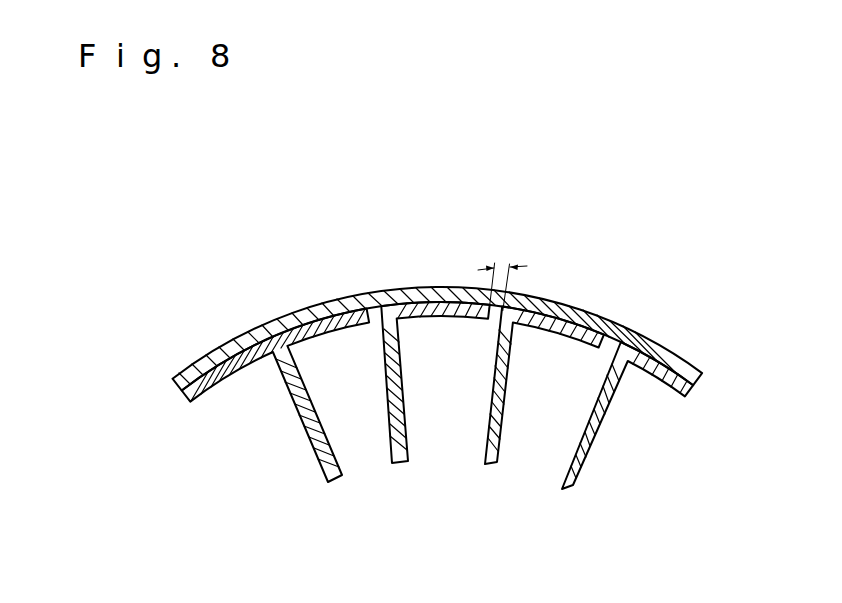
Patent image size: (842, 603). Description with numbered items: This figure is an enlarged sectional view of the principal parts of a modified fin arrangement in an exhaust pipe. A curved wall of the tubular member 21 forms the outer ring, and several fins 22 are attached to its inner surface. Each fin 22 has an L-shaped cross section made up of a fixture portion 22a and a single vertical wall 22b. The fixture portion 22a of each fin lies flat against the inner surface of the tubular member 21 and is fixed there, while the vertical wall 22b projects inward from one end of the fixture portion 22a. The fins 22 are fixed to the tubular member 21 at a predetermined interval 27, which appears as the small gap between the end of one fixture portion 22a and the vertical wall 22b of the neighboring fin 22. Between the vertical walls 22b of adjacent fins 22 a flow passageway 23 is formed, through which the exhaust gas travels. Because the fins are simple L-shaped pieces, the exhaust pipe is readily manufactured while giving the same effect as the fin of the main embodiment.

The tubular member 21 is at (661, 357).
The fin 22 is at (592, 455).
The fixture portion 22a is at (423, 308).
The vertical wall 22b is at (393, 452).
The flow passageway 23 is at (330, 366).
The predetermined interval 27 is at (515, 267).